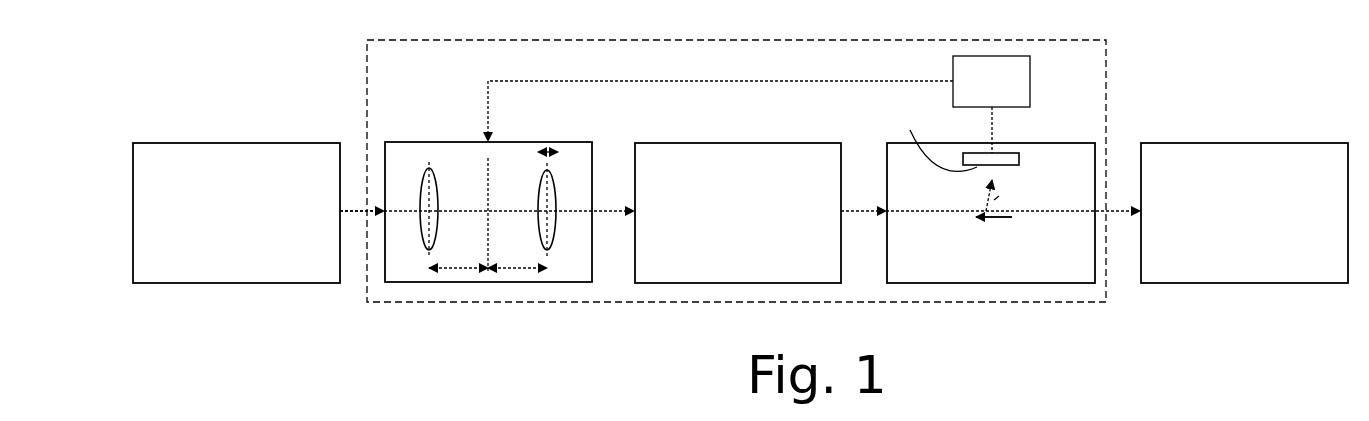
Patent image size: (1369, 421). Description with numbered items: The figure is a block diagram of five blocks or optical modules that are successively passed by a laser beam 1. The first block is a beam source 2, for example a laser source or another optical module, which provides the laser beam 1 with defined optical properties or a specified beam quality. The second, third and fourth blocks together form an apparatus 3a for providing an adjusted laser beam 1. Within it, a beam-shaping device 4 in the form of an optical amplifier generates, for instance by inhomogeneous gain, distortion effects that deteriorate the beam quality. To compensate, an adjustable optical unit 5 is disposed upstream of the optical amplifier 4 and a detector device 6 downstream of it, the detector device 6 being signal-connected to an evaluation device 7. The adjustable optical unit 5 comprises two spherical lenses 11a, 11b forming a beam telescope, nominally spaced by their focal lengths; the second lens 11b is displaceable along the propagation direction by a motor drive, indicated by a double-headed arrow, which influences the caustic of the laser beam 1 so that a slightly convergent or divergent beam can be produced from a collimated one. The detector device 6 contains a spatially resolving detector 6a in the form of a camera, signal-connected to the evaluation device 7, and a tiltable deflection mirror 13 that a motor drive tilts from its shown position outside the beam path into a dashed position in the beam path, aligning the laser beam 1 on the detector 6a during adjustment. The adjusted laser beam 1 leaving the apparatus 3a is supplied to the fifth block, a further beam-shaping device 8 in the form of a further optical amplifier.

The laser beam 1 is at (357, 213).
The beam source 2 is at (268, 284).
The apparatus for providing an adjusted laser beam 3a is at (1107, 64).
The beam-shaping device 4 is at (718, 284).
The adjustable optical unit 5 is at (489, 283).
The detector device 6 is at (973, 284).
The spatially resolving detector 6a is at (1017, 163).
The evaluation device 7 is at (1000, 56).
The further beam-shaping device 8 is at (1236, 284).
The first lens 11a is at (427, 228).
The second lens 11b is at (552, 228).
The tiltable deflection mirror 13 is at (960, 227).